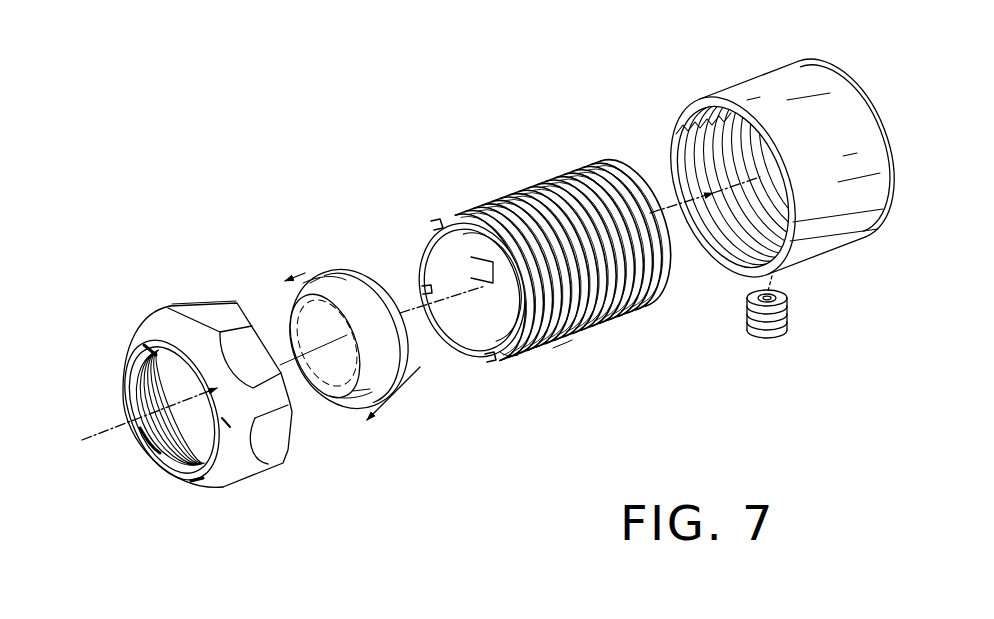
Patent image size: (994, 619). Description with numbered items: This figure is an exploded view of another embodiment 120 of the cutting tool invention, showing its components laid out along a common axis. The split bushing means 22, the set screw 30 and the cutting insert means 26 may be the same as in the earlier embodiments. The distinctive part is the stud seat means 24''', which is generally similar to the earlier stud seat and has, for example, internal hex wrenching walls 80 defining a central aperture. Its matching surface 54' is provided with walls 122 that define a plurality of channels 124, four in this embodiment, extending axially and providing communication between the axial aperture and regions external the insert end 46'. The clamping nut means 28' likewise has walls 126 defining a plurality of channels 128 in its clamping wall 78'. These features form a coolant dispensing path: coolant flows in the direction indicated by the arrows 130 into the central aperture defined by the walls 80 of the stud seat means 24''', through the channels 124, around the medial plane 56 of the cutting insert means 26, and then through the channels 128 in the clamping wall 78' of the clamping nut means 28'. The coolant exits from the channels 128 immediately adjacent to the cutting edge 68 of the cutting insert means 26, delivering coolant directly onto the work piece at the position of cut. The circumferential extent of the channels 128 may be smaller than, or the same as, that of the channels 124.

The embodiment 120 is at (372, 114).
The split bushing means 22 is at (752, 84).
The arrows 130 is at (352, 266).
The set screw 30 is at (793, 312).
The stud seat means 24''' is at (570, 242).
The channels 124 is at (500, 277).
The walls 122 is at (428, 286).
The medial plane 56 is at (324, 262).
The cutting insert means 26 is at (314, 268).
The clamping nut means 28' is at (198, 276).
The channels 128 is at (137, 347).
The walls 126 is at (147, 437).
The clamping wall 78' is at (187, 418).
The cutting edge 68 is at (332, 400).
The insert end 46' is at (407, 396).
The matching surface 54' is at (525, 371).
The internal hex wrenching walls 80 is at (553, 348).